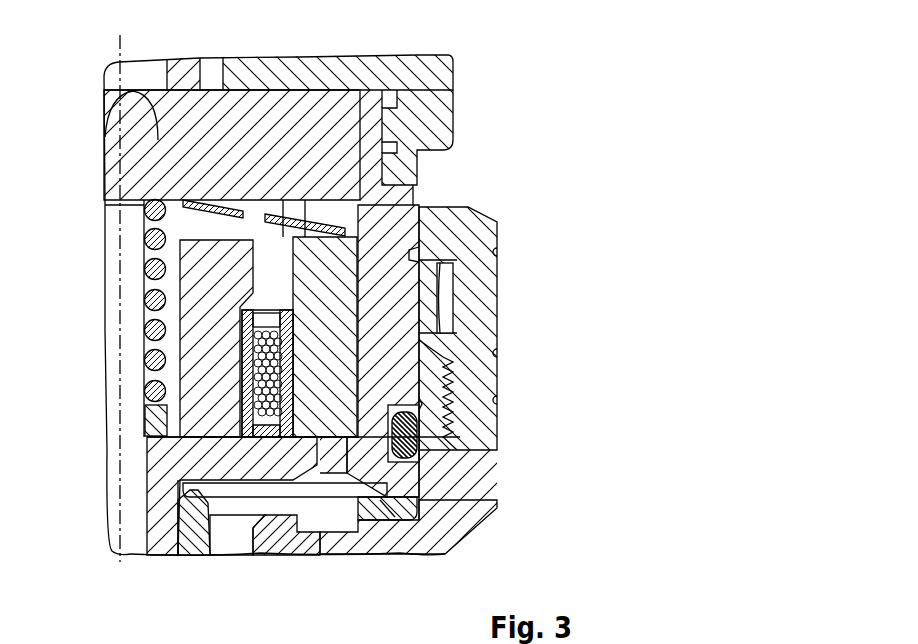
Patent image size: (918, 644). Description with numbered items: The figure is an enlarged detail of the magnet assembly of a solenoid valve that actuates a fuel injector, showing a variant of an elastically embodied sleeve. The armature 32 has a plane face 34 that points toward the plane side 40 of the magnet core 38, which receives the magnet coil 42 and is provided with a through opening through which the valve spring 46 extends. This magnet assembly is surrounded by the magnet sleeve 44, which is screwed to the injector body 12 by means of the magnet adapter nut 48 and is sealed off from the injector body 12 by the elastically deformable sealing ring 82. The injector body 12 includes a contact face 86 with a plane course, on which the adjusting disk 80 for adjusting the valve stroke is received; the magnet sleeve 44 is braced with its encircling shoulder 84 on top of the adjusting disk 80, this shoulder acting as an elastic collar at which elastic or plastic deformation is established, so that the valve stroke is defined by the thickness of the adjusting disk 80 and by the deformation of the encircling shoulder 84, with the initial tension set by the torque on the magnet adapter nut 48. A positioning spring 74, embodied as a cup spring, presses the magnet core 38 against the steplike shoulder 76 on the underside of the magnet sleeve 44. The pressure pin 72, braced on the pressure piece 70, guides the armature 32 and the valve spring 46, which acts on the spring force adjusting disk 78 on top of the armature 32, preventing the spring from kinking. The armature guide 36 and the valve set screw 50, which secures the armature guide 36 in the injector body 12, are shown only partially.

The injector body 12 is at (453, 528).
The armature 32 is at (160, 535).
The plane face 34 is at (320, 440).
The armature guide 36 is at (190, 535).
The magnet core 38 is at (338, 262).
The plane side 40 is at (447, 447).
The magnet coil 42 is at (303, 330).
The magnet sleeve 44 is at (410, 203).
The valve spring 46 is at (156, 200).
The magnet adapter nut 48 is at (486, 273).
The valve set screw 50 is at (273, 535).
The pressure piece 70 is at (342, 140).
The pressure pin 72 is at (118, 361).
The positioning spring 74 is at (212, 203).
The steplike shoulder 76 is at (420, 403).
The spring force adjusting disk 78 is at (200, 497).
The adjusting disk 80 is at (388, 507).
The sealing ring 82 is at (412, 425).
The encircling shoulder 84 is at (400, 478).
The contact face 86 is at (383, 505).